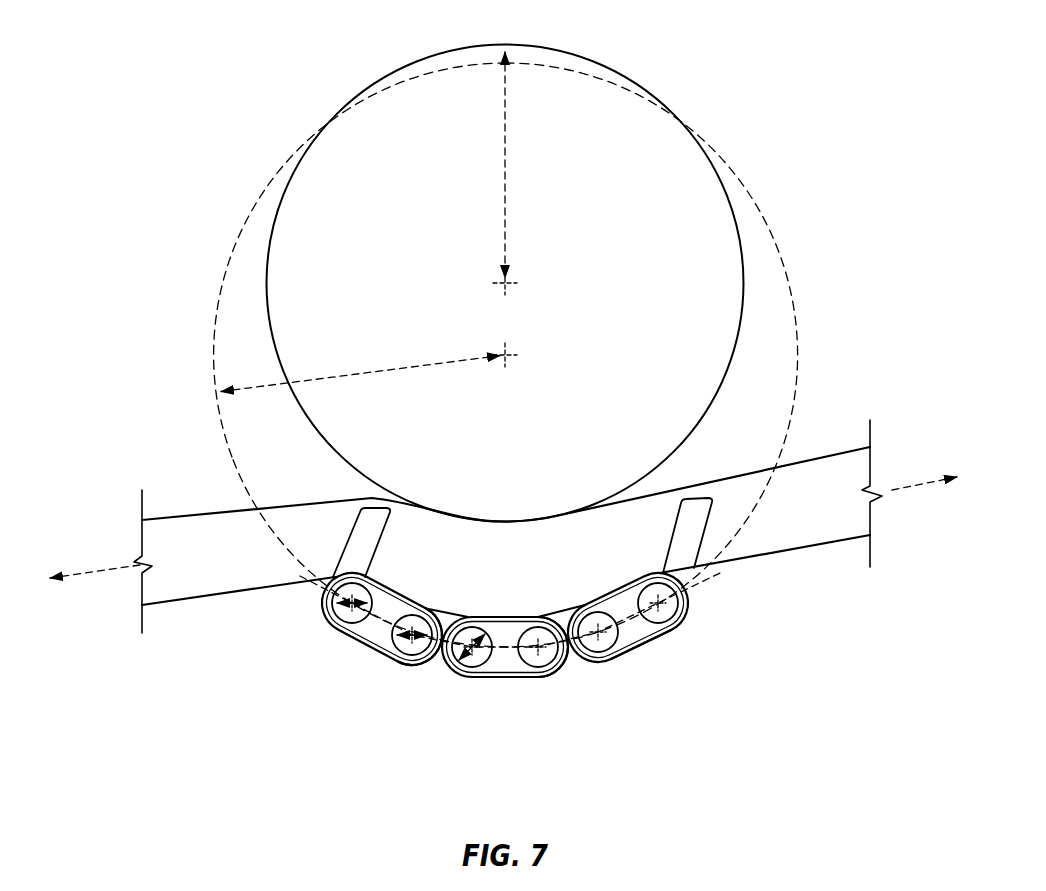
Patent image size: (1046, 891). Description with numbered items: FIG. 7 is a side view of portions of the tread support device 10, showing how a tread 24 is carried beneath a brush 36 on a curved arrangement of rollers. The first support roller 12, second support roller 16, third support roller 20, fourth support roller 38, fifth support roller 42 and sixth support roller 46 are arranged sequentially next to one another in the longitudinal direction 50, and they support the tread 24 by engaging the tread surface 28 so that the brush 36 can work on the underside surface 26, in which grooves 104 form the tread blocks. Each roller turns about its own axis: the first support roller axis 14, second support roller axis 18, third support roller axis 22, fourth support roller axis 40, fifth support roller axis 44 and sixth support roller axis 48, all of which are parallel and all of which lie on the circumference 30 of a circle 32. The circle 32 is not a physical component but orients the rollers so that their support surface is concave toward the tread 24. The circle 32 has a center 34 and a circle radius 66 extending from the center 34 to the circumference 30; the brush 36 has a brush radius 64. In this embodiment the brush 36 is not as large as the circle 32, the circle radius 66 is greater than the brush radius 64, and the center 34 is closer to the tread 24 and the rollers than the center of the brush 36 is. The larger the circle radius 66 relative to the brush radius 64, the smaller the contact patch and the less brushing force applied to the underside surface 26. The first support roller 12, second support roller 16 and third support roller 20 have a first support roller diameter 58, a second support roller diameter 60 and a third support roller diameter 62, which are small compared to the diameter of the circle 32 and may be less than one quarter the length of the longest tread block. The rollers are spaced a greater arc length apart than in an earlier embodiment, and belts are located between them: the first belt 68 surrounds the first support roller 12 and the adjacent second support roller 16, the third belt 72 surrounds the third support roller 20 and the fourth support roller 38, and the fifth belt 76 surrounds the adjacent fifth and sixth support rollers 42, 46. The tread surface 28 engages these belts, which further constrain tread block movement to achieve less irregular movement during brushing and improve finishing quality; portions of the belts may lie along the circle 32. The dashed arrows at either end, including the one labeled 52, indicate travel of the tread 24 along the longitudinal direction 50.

The tread support device 10 is at (766, 42).
The first support roller 12 is at (326, 618).
The first support roller axis 14 is at (345, 588).
The second support roller 16 is at (407, 664).
The second support roller axis 18 is at (418, 632).
The third support roller 20 is at (470, 676).
The third support roller axis 22 is at (475, 642).
The tread 24 is at (508, 532).
The underside surface 26 is at (302, 494).
The tread surface 28 is at (769, 560).
The circumference 30 is at (227, 448).
The circle 32 is at (799, 385).
The center 34 is at (510, 358).
The brush 36 is at (736, 353).
The fourth support roller 38 is at (538, 678).
The fourth support roller axis 40 is at (540, 642).
The fifth support roller 42 is at (594, 668).
The fifth support roller axis 44 is at (608, 646).
The sixth support roller 46 is at (690, 604).
The sixth support roller axis 48 is at (668, 633).
The longitudinal direction 50 is at (82, 571).
The belt travel direction 52 is at (927, 484).
The first support roller diameter 58 is at (360, 628).
The second support roller diameter 60 is at (413, 646).
The third support roller diameter 62 is at (488, 656).
The brush radius 64 is at (509, 161).
The circle radius 66 is at (362, 372).
The first belt 68 is at (372, 647).
The third belt 72 is at (507, 674).
The fifth belt 76 is at (640, 659).
The grooves 104 is at (380, 560).